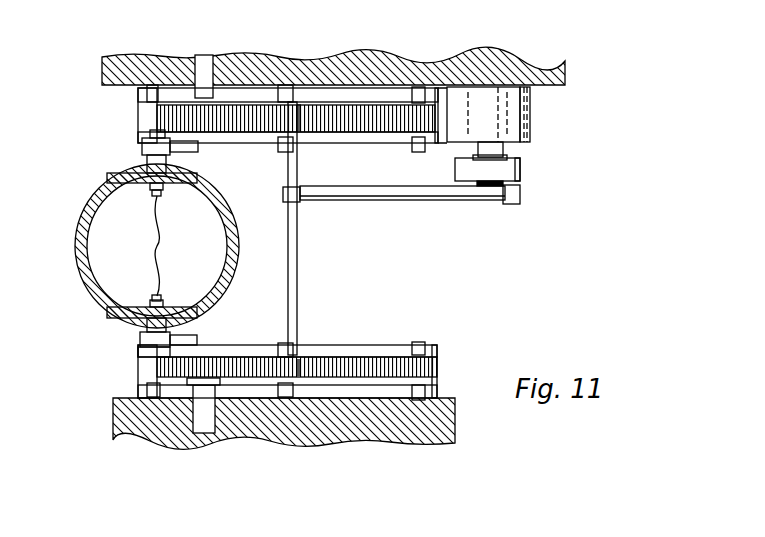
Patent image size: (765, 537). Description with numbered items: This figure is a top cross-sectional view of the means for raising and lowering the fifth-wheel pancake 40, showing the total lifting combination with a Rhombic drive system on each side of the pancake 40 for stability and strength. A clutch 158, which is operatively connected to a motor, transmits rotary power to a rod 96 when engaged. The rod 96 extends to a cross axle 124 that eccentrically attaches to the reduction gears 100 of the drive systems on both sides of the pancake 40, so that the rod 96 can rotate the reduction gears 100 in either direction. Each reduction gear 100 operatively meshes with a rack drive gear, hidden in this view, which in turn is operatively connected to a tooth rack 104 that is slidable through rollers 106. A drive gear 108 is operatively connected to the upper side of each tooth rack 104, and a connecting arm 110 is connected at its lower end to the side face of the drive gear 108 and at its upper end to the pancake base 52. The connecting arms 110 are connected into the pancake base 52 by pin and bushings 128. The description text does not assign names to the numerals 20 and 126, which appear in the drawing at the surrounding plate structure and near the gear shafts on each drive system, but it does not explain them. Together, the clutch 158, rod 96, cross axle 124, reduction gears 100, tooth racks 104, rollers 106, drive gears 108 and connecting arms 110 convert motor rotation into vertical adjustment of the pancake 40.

The mounting plate 20 is at (565, 83).
The clutch 158 is at (530, 110).
The rod 96 is at (414, 198).
The cross axle 124 is at (298, 296).
The tooth rack 104 is at (398, 135).
The drive gear 108 is at (160, 121).
The rollers 106 is at (413, 141).
The reduction gear 100 is at (318, 113).
The gear shaft 126 is at (285, 122).
The connecting arm 110 is at (142, 147).
The fifth-wheel pancake 40 is at (72, 249).
The pancake base 52 is at (83, 272).
The pin and bushings 128 is at (136, 246).